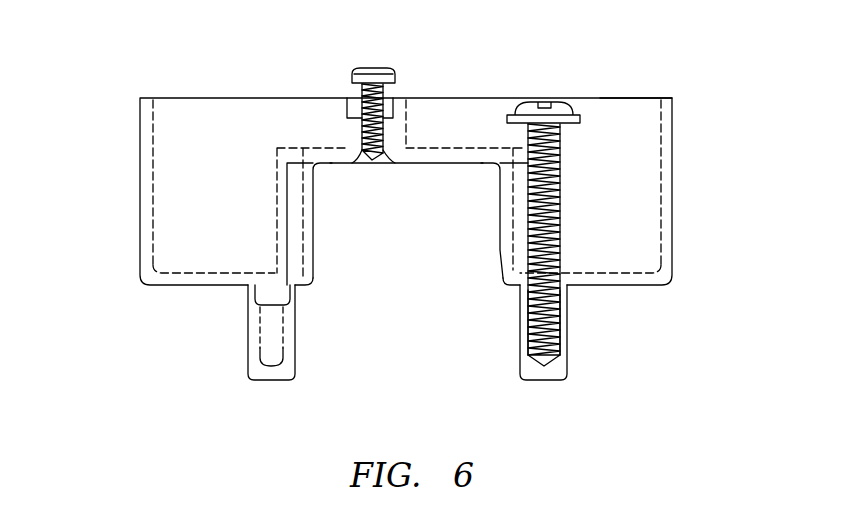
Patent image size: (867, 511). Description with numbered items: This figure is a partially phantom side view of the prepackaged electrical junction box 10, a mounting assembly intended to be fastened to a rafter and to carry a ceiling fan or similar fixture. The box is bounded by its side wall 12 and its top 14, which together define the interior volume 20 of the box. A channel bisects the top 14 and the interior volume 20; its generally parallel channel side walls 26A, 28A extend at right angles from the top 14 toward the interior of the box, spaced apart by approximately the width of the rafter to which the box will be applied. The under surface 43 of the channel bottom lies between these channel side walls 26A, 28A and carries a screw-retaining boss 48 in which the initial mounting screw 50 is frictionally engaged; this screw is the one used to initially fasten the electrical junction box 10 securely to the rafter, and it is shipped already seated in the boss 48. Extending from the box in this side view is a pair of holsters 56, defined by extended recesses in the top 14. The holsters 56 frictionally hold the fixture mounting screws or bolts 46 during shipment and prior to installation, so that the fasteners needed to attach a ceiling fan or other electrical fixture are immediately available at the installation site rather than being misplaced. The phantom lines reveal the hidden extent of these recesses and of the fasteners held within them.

The electrical junction box 10 is at (712, 192).
The side wall 12 is at (152, 137).
The top 14 is at (207, 282).
The volume 20 is at (618, 113).
The channel side wall 26A is at (313, 243).
The channel side wall 28A is at (500, 243).
The under surface 43 is at (450, 148).
The fixture mounting screw 46 is at (511, 105).
The screw-retaining boss 48 is at (347, 138).
The initial mounting screw 50 is at (365, 68).
The holster 56 is at (258, 376).